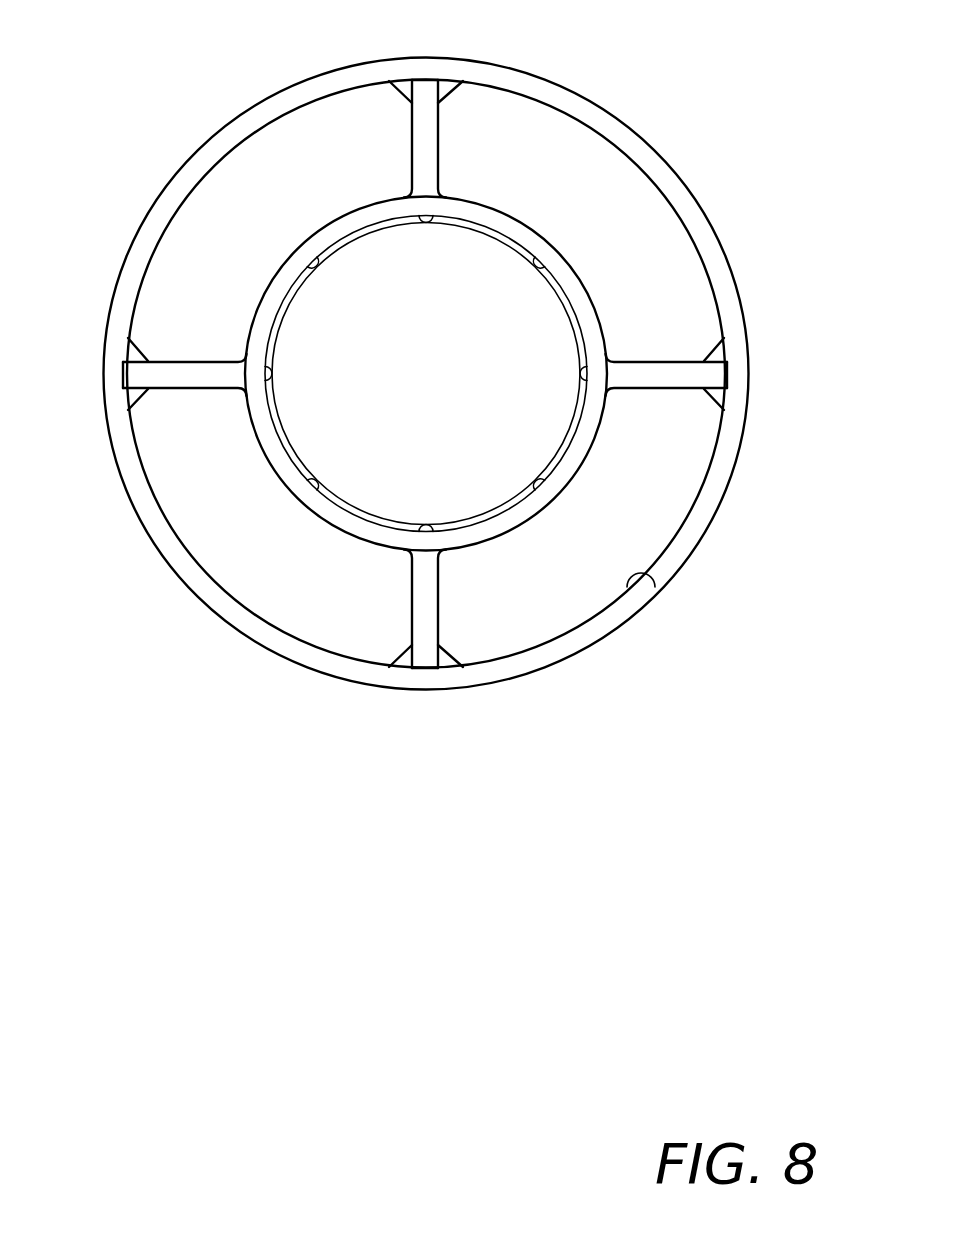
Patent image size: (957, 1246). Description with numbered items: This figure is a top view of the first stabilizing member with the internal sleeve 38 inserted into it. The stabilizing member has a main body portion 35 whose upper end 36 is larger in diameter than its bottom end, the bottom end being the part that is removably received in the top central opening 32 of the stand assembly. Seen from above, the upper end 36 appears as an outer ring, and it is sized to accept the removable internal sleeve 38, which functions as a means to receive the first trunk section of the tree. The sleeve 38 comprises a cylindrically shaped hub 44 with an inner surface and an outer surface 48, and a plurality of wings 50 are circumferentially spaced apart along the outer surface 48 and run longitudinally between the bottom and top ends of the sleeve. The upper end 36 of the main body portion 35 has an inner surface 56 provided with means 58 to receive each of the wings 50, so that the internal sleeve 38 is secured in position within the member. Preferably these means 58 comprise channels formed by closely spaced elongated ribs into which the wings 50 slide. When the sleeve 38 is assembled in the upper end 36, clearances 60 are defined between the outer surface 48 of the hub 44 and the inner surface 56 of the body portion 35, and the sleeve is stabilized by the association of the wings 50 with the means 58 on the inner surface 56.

The top central opening 32 is at (160, 393).
The main body portion 35 is at (711, 225).
The upper end 36 is at (283, 90).
The internal sleeve 38 is at (303, 240).
The cylindrically shaped hub 44 is at (530, 225).
The outer surface 48 is at (258, 457).
The wings 50 is at (443, 136).
The inner surface 56 is at (627, 587).
The means to receive the wings 58 is at (397, 98).
The clearances 60 is at (578, 150).